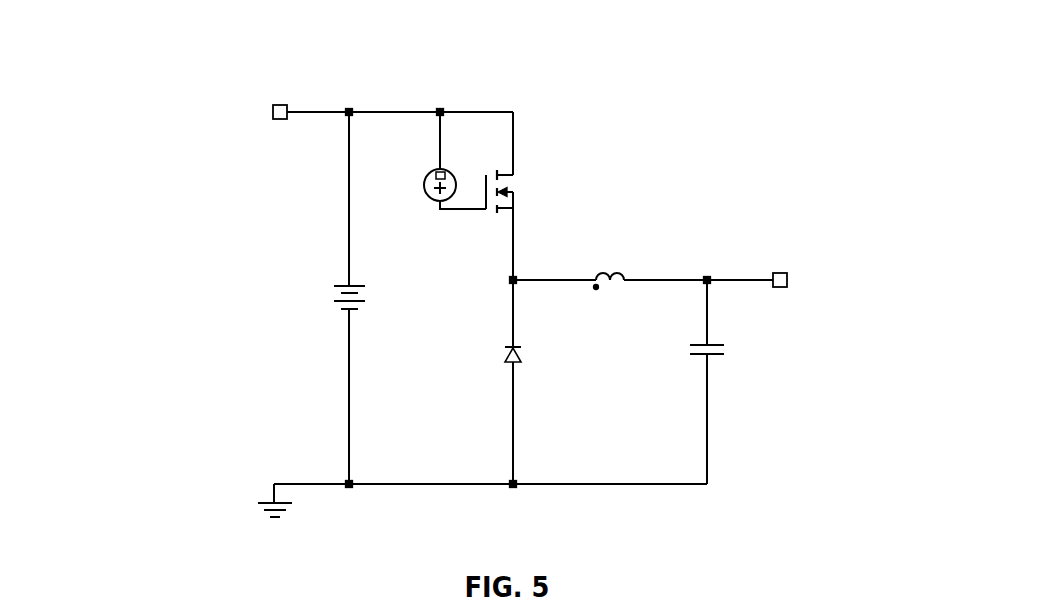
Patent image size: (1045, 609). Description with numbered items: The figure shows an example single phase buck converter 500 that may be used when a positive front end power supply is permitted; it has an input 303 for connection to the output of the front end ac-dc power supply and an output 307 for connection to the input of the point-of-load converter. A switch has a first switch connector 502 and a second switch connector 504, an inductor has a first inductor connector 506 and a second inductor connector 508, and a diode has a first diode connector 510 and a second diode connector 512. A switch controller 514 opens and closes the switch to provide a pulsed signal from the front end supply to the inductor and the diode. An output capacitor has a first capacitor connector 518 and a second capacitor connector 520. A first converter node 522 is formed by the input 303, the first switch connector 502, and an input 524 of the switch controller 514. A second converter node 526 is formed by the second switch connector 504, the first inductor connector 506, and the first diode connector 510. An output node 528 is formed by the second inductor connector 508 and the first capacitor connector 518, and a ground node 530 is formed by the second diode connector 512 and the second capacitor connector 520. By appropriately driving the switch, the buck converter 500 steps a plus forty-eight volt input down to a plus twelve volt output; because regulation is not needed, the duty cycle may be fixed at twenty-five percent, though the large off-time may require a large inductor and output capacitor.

The buck converter 500 is at (156, 36).
The input 303 is at (282, 104).
The first converter node 522 is at (414, 89).
The input of the switch controller 524 is at (438, 153).
The switch controller 514 is at (432, 201).
The first switch connector 502 is at (515, 138).
The second switch connector 504 is at (515, 226).
The second converter node 526 is at (503, 282).
The first inductor connector 506 is at (527, 283).
The second inductor connector 508 is at (656, 278).
The output node 528 is at (719, 261).
The output 307 is at (781, 271).
The first capacitor connector 518 is at (710, 325).
The second capacitor connector 520 is at (709, 440).
The first diode connector 510 is at (511, 334).
The second diode connector 512 is at (511, 425).
The ground node 530 is at (441, 501).